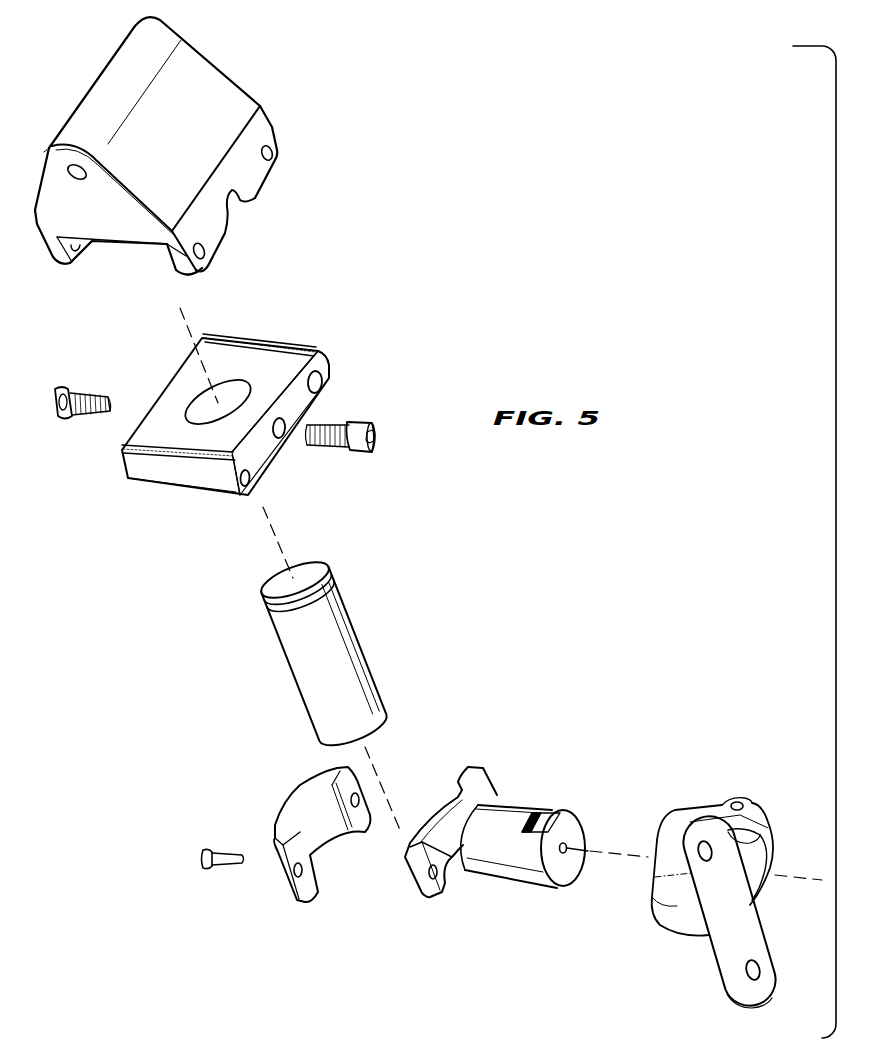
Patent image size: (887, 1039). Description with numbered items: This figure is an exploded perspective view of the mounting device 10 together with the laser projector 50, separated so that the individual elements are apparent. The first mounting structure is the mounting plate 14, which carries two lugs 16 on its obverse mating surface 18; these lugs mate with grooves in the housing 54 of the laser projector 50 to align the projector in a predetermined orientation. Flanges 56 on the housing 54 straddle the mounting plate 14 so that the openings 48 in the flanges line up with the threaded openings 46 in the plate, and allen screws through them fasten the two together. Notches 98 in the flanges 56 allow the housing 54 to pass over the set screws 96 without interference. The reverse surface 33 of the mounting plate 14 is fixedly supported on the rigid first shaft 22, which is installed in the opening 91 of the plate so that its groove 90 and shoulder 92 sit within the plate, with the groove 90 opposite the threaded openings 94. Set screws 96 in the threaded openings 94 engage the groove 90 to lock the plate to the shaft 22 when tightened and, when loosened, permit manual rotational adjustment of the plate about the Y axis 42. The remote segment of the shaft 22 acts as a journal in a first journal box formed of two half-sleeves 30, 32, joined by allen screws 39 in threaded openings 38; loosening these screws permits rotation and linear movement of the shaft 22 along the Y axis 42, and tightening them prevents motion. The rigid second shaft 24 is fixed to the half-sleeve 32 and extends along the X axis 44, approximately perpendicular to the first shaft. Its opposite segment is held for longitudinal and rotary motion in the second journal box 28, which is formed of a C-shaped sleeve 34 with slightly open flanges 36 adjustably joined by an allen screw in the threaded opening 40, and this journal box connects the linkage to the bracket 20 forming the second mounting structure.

The mounting device 10 is at (264, 662).
The mounting plate 14 is at (222, 414).
The lugs 16 is at (263, 348).
The obverse mating surface 18 is at (298, 346).
The bracket 20 is at (742, 880).
The first shaft 22 is at (331, 639).
The second shaft 24 is at (562, 863).
The second journal box 28 is at (663, 850).
The half-sleeve 30 is at (341, 834).
The half-sleeve 32 is at (470, 878).
The reverse surface 33 is at (330, 404).
The C-shaped sleeve 34 is at (747, 822).
The flanges 36 is at (745, 806).
The threaded openings 38 is at (296, 872).
The allen screws 39 is at (228, 850).
The threaded opening 40 is at (735, 801).
The Y axis 42 is at (180, 312).
The X axis 44 is at (590, 857).
The threaded openings 46 is at (249, 491).
The openings 48 is at (272, 153).
The laser projector 50 is at (182, 160).
The housing 54 is at (222, 92).
The flanges 56 is at (92, 248).
The groove 90 is at (338, 581).
The opening 91 is at (218, 400).
The shoulder 92 is at (328, 577).
The threaded openings 94 is at (281, 447).
The set screws 96 is at (63, 387).
The notches 98 is at (233, 205).